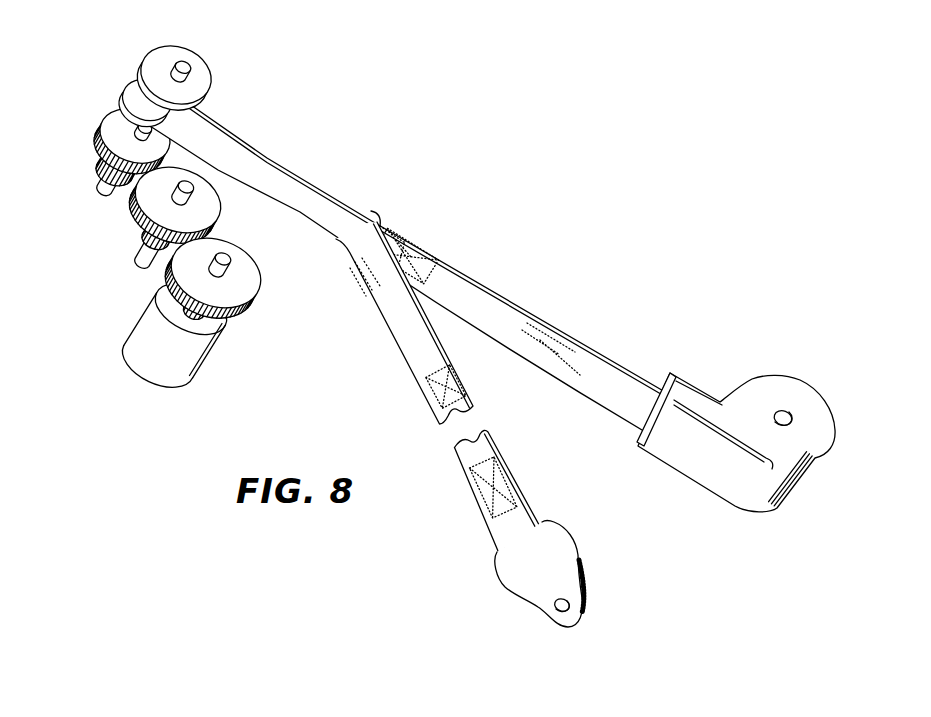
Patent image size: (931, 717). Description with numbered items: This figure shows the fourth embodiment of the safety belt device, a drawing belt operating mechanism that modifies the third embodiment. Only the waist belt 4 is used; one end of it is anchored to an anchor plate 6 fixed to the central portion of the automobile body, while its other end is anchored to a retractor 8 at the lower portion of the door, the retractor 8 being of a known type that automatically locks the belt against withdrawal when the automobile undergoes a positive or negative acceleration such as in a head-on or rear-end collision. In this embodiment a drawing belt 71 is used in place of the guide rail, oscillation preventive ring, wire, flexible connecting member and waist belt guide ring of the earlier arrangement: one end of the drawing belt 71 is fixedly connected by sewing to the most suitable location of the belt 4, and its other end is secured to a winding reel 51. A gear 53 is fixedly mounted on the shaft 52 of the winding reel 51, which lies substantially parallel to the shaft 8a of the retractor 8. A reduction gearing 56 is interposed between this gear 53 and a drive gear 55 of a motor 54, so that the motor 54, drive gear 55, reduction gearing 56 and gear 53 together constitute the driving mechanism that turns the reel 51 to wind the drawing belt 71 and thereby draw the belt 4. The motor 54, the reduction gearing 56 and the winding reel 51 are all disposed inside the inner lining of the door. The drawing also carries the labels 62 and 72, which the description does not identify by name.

The waist belt 4 is at (410, 370).
The anchor plate 6 is at (570, 553).
The retractor 8 is at (708, 478).
The shaft of the retractor 8a is at (786, 410).
The winding reel 51 is at (205, 88).
The shaft 52 is at (186, 64).
The gear 53 is at (100, 172).
The motor 54 is at (208, 350).
The drive gear 55 is at (260, 262).
The reduction gearing 56 is at (135, 227).
The knurled disc 62 is at (117, 114).
The drawing belt 71 is at (325, 190).
The stitching 72 is at (427, 255).